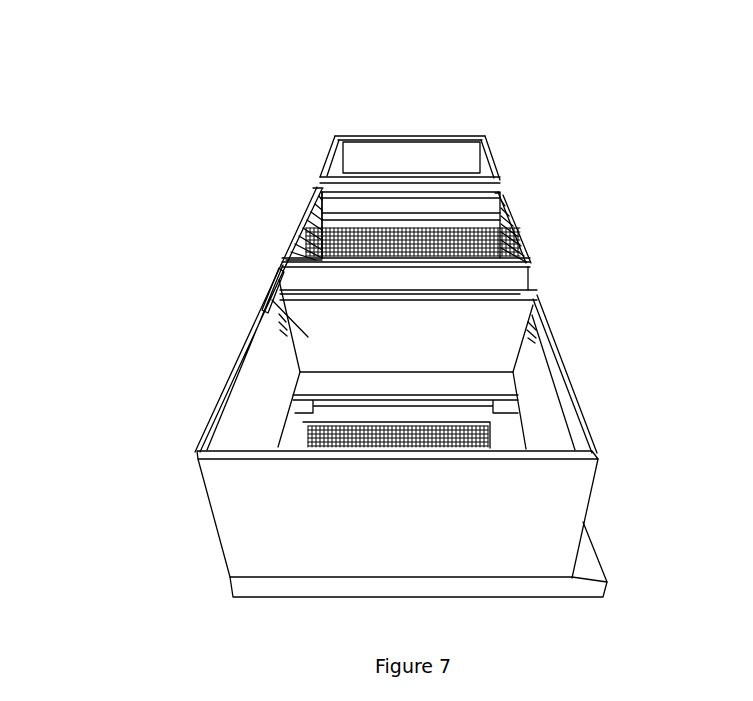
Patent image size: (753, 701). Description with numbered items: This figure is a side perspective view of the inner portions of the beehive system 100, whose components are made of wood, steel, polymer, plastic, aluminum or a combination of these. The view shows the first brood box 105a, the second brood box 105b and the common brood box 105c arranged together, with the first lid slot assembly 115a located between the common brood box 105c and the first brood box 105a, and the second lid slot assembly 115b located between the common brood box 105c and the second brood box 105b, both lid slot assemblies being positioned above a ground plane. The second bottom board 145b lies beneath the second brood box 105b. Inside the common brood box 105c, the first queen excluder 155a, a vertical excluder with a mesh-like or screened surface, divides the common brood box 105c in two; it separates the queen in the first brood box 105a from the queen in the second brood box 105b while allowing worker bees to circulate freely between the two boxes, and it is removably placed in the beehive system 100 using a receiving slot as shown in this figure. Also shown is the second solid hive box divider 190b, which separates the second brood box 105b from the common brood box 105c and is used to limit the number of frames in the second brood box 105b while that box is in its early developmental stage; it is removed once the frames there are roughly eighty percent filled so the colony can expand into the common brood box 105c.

The beehive system 100 is at (97, 91).
The first brood box 105a is at (493, 157).
The second brood box 105b is at (592, 437).
The common brood box 105c is at (528, 255).
The first lid slot assembly 115a is at (300, 227).
The second lid slot assembly 115b is at (233, 360).
The second bottom board 145b is at (581, 566).
The first queen excluder 155a is at (430, 238).
The second solid hive box divider 190b is at (262, 312).